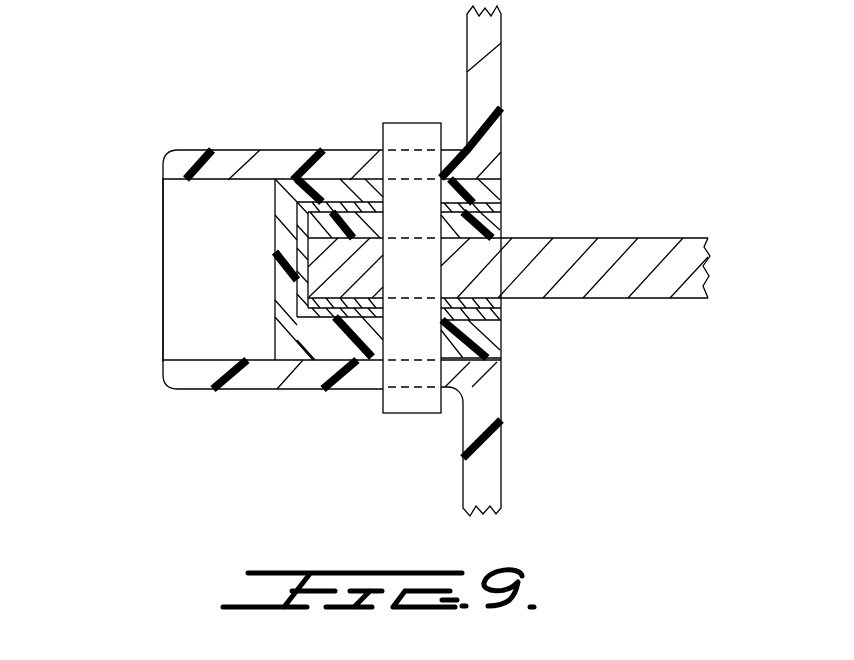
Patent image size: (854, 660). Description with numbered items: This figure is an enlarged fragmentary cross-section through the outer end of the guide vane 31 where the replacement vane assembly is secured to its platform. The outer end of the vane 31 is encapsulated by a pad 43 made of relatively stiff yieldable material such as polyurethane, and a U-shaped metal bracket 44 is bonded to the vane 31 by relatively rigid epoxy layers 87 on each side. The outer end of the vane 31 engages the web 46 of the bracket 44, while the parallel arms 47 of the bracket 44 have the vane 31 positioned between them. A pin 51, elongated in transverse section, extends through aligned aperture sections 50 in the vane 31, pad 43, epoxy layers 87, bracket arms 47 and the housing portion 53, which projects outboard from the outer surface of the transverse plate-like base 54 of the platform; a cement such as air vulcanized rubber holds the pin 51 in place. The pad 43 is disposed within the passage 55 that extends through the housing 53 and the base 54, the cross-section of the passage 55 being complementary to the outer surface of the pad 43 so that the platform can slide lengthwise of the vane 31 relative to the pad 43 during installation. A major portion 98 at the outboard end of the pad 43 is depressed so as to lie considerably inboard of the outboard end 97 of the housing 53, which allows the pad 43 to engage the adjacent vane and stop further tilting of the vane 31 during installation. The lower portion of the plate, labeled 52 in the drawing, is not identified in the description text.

The vane 31 is at (625, 257).
The pad 43 is at (313, 339).
The U-shaped metal bracket 44 is at (490, 184).
The web 46 is at (298, 297).
The bracket arms 47 is at (503, 322).
The aperture sections 50 is at (193, 183).
The pin 51 is at (417, 150).
The lower plate portion 52 is at (486, 467).
The housing portion 53 is at (233, 167).
The base 54 is at (470, 73).
The passage 55 is at (180, 233).
The epoxy layers 87 is at (500, 217).
The outboard end of housing 97 is at (186, 374).
The depressed portion of pad 98 is at (278, 268).